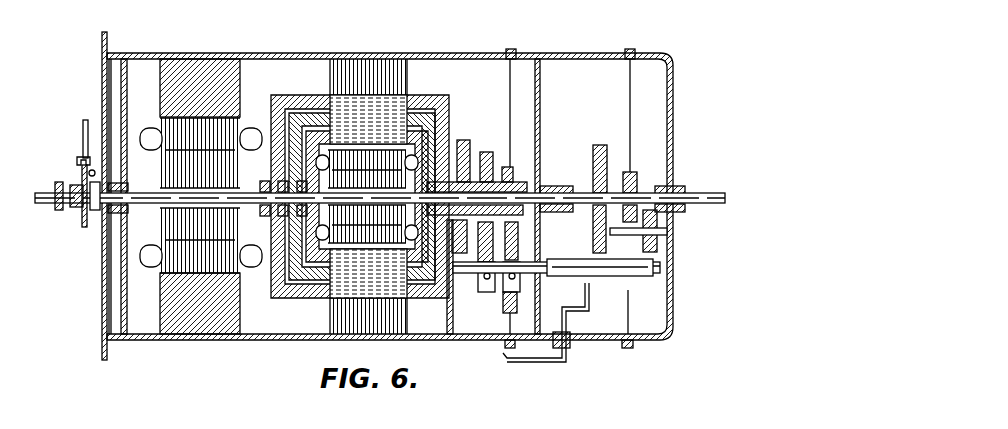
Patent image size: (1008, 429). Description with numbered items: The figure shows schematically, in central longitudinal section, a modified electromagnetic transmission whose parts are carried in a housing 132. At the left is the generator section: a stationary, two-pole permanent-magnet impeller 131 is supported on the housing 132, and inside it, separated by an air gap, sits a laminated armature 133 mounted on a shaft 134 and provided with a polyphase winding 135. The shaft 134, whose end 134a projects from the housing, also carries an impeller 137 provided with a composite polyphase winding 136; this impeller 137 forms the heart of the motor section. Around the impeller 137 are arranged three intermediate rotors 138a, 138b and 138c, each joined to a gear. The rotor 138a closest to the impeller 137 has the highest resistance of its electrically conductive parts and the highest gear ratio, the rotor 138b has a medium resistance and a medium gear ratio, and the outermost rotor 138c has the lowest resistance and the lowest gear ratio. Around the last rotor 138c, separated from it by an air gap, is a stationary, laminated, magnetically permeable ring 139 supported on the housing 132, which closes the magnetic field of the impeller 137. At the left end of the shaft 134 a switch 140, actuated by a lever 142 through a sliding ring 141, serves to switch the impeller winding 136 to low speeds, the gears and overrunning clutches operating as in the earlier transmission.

The permanent-magnet impeller 131 is at (202, 67).
The housing 132 is at (152, 40).
The laminated armature 133 is at (227, 157).
The shaft 134 is at (155, 200).
The shaft end 134a is at (48, 191).
The polyphase winding 135 is at (152, 193).
The composite polyphase winding 136 is at (420, 157).
The impeller 137 is at (343, 218).
The intermediate rotor 138a is at (425, 138).
The intermediate rotor 138b is at (427, 116).
The intermediate rotor 138c is at (427, 107).
The laminated magnetically permeable ring 139 is at (367, 60).
The switch 140 is at (97, 213).
The sliding ring 141 is at (83, 220).
The lever 142 is at (83, 136).